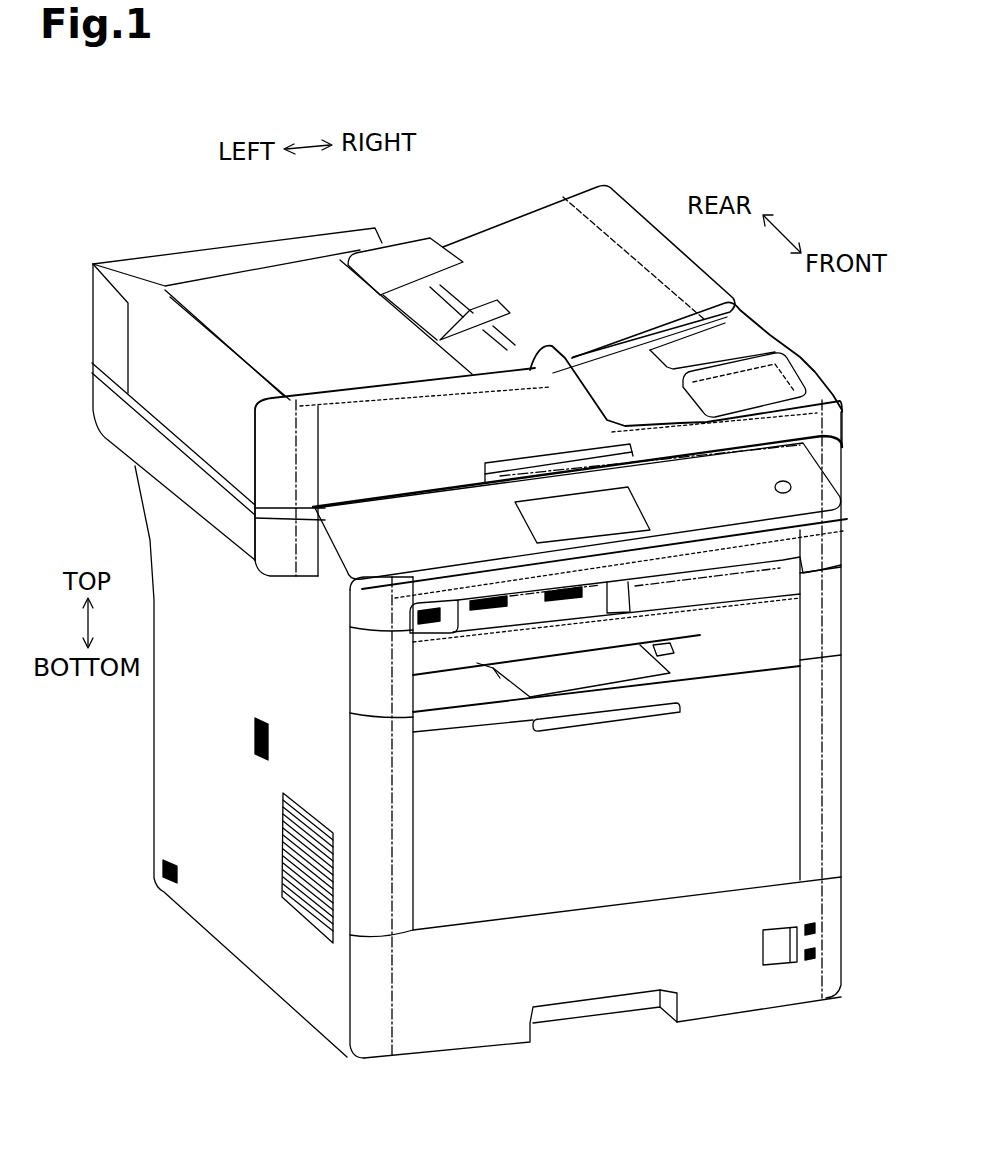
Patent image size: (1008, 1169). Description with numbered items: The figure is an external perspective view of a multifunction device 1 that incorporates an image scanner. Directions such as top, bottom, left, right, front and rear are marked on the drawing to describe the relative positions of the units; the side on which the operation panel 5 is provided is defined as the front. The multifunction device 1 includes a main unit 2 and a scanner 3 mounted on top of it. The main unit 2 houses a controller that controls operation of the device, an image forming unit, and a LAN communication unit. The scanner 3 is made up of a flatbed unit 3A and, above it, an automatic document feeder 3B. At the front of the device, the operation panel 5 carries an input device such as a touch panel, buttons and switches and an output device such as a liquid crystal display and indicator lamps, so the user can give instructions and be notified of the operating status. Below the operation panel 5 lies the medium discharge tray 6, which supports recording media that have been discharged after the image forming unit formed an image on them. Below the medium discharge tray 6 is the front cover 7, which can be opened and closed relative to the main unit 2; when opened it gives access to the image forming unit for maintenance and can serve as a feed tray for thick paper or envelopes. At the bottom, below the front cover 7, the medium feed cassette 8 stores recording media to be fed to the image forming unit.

The multifunction device 1 is at (634, 132).
The main unit 2 is at (172, 727).
The scanner 3 is at (246, 252).
The flatbed unit 3A is at (833, 470).
The automatic document feeder 3B is at (834, 418).
The operation panel 5 is at (783, 506).
The medium discharge tray 6 is at (695, 628).
The front cover 7 is at (747, 747).
The medium feed cassette 8 is at (718, 988).